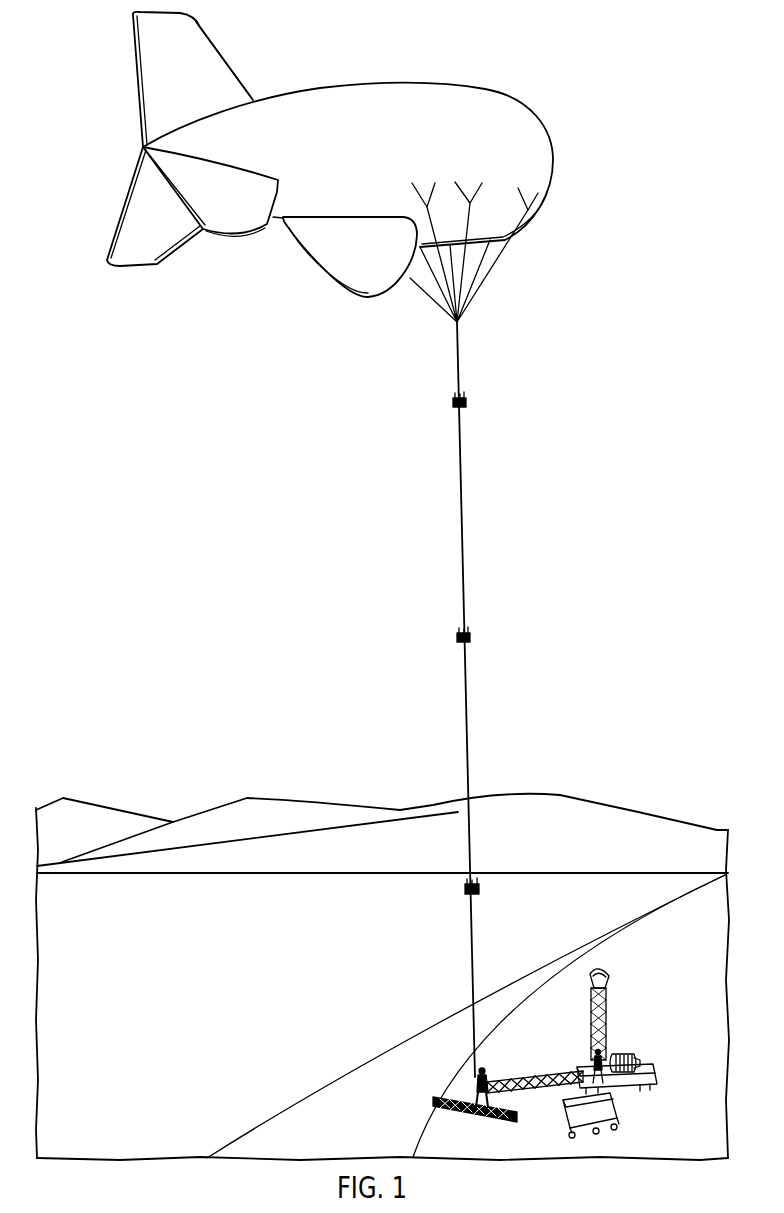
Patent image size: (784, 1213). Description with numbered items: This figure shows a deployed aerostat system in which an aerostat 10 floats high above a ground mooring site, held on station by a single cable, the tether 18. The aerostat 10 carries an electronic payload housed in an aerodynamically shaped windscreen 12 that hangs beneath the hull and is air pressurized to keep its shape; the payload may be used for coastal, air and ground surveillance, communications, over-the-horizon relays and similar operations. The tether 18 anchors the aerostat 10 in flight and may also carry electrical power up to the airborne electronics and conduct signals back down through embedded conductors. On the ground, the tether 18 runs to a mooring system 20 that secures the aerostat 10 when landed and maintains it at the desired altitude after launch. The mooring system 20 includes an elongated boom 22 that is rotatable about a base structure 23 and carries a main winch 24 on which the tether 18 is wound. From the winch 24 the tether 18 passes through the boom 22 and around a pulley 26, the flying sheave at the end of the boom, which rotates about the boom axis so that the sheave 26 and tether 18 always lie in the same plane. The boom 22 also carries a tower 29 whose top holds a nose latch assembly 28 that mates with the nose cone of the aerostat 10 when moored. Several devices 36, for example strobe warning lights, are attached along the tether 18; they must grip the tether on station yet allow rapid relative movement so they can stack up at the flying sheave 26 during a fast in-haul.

The aerostat 10 is at (478, 88).
The windscreen 12 is at (350, 278).
The tether 18 is at (460, 537).
The mooring system 20 is at (658, 1122).
The boom 22 is at (532, 1075).
The base structure 23 is at (577, 1093).
The main winch 24 is at (622, 1051).
The pulley 26 is at (473, 1088).
The nose latch assembly 28 is at (600, 971).
The tower 29 is at (606, 1012).
The devices 36 is at (473, 400).